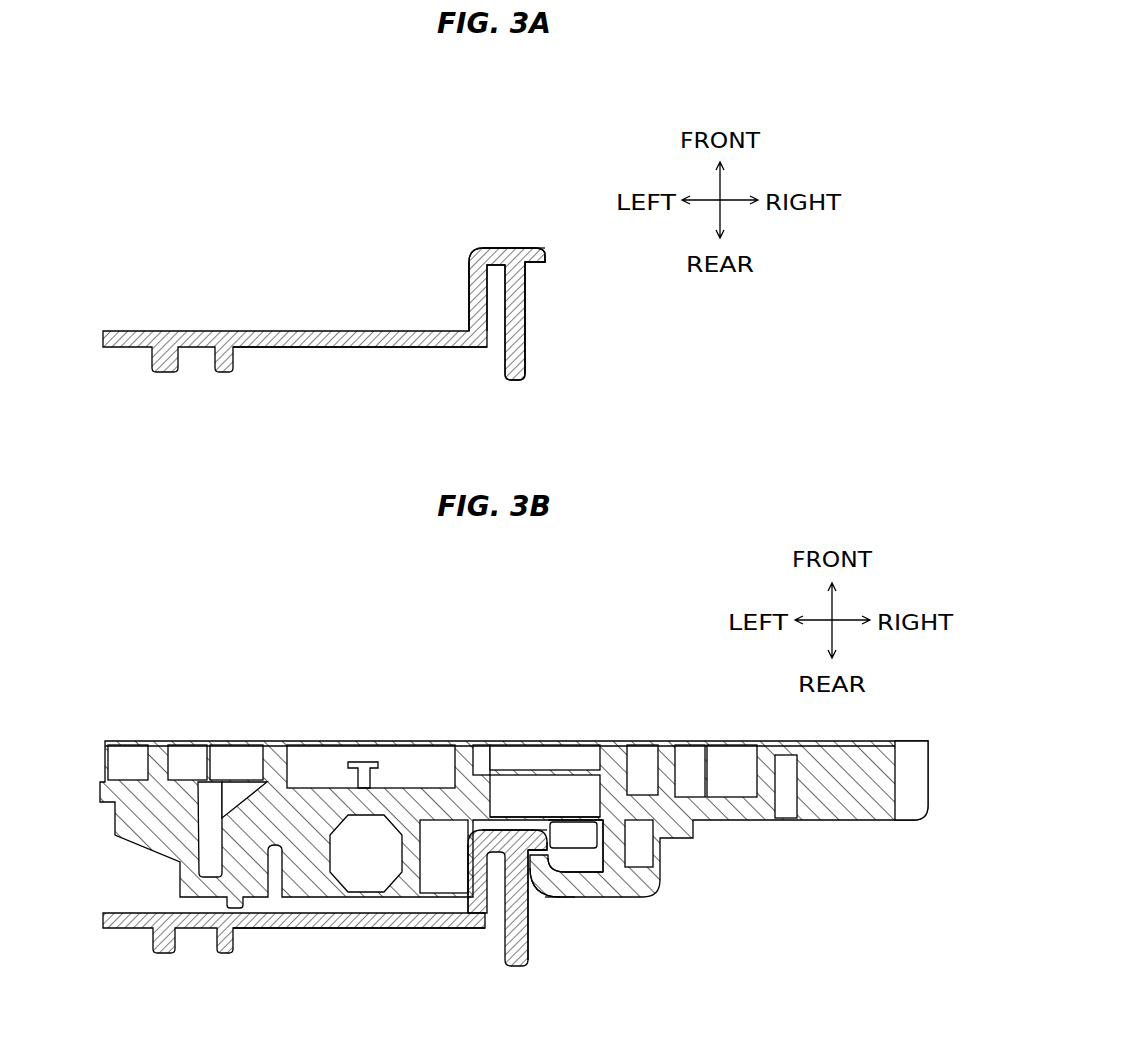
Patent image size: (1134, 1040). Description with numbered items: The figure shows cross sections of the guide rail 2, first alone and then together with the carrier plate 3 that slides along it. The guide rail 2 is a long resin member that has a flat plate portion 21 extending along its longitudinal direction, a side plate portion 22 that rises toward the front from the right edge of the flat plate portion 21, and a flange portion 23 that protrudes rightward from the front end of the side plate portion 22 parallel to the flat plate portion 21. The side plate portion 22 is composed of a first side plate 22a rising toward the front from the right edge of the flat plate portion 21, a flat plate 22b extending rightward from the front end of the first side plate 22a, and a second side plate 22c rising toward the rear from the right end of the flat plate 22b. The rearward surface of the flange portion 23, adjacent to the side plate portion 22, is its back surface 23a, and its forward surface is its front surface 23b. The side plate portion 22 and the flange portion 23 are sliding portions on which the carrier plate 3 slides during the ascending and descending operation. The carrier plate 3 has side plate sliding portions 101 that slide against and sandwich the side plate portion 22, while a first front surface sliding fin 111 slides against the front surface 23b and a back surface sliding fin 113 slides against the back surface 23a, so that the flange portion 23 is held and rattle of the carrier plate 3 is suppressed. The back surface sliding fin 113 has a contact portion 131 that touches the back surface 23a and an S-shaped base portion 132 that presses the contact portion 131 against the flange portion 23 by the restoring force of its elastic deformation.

In FIG. 3A, the guide rail 2 is at (299, 321).
In FIG. 3B, the guide rail 2 is at (314, 947).
In FIG. 3A, the flat plate portion 21 is at (310, 346).
In FIG. 3B, the flat plate portion 21 is at (418, 930).
In FIG. 3A, the side plate portion 22 is at (475, 260).
In FIG. 3B, the side plate portion 22 is at (536, 970).
In FIG. 3A, the first side plate 22a is at (469, 287).
In FIG. 3B, the first side plate 22a is at (482, 932).
In FIG. 3A, the flat plate 22b is at (497, 248).
In FIG. 3B, the flat plate 22b is at (478, 828).
In FIG. 3A, the second side plate 22c is at (525, 327).
In FIG. 3B, the second side plate 22c is at (528, 947).
In FIG. 3A, the flange portion 23 is at (547, 252).
In FIG. 3B, the flange portion 23 is at (540, 828).
In FIG. 3A, the back surface 23a is at (533, 263).
In FIG. 3B, the back surface 23a is at (595, 892).
In FIG. 3A, the front surface 23b is at (533, 247).
In FIG. 3B, the front surface 23b is at (532, 828).
In FIG. 3B, the carrier plate 3 is at (733, 729).
In FIG. 3B, the side plate sliding portion 101 is at (570, 893).
In FIG. 3B, the first front surface sliding fin 111 is at (516, 822).
In FIG. 3B, the back surface sliding fin 113 is at (555, 900).
In FIG. 3B, the contact portion 131 is at (548, 826).
In FIG. 3B, the base portion 132 is at (607, 850).